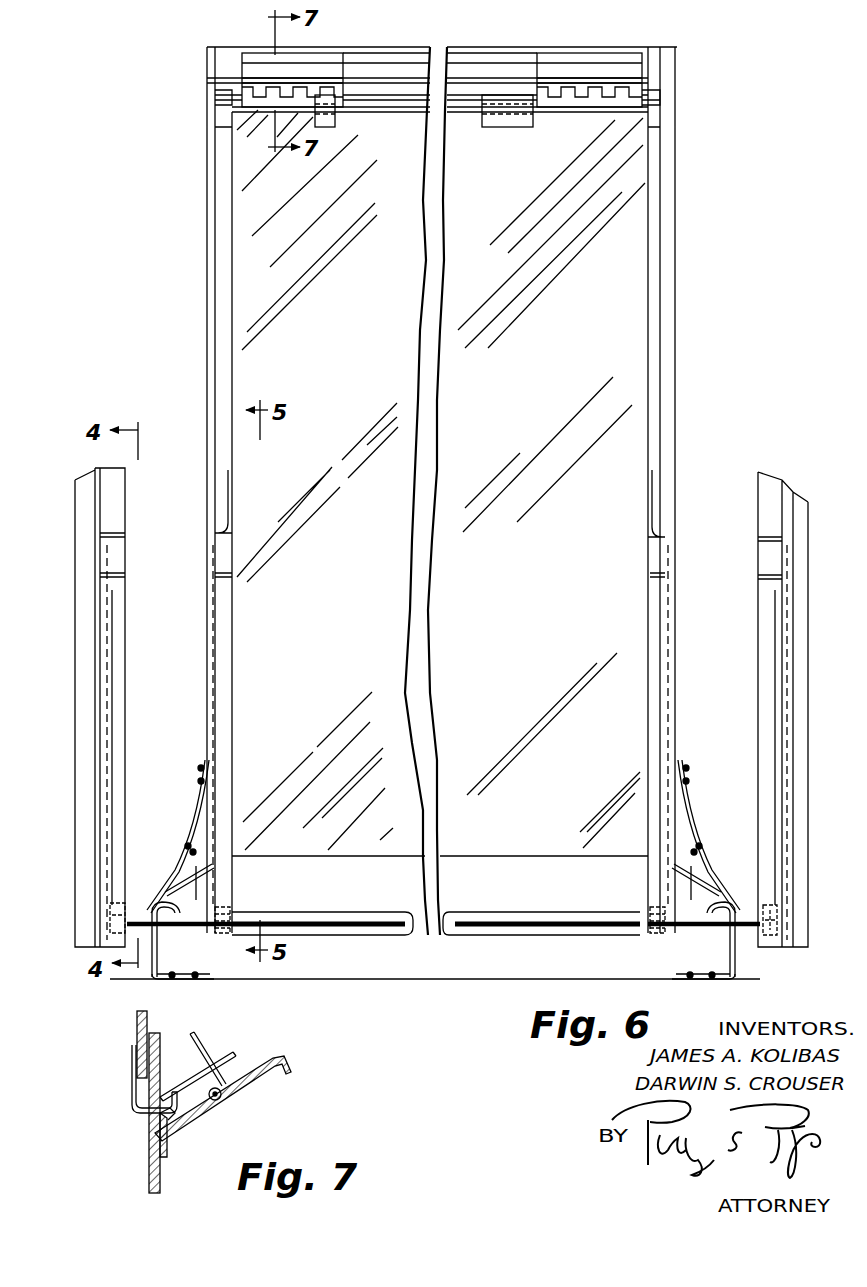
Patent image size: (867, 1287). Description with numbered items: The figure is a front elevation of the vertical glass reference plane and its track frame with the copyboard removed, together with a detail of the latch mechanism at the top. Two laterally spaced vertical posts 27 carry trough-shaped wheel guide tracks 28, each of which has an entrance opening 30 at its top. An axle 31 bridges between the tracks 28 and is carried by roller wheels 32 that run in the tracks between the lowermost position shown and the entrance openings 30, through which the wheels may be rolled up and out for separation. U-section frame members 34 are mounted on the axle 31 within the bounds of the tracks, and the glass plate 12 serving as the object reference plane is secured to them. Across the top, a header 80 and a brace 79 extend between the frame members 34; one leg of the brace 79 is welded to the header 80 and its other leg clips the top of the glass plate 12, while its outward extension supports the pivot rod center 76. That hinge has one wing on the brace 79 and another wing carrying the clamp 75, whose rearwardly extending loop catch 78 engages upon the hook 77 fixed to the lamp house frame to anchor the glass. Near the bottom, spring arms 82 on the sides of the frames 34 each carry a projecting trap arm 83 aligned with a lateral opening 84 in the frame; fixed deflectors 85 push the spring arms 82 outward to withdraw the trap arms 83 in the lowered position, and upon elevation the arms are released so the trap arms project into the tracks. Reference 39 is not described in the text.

In FIG. 6, the glass plate 12 is at (441, 480).
In FIG. 7, the glass plate 12 is at (162, 1178).
In FIG. 6, the vertical post 27 is at (82, 505).
In FIG. 6, the wheel guide track 28 is at (122, 596).
In FIG. 6, the entrance opening 30 is at (122, 528).
In FIG. 6, the axle 31 is at (503, 918).
In FIG. 6, the roller wheel 32 is at (122, 900).
In FIG. 6, the frame member 34 is at (236, 471).
In FIG. 6, the bracket flange 39 is at (215, 538).
In FIG. 7, the clamp 75 is at (202, 1048).
In FIG. 6, the pivot rod center 76 is at (550, 110).
In FIG. 7, the pivot rod center 76 is at (222, 1100).
In FIG. 7, the hook 77 is at (132, 1084).
In FIG. 7, the loop catch 78 is at (186, 1080).
In FIG. 7, the brace 79 is at (180, 1130).
In FIG. 6, the header 80 is at (606, 52).
In FIG. 7, the header 80 is at (152, 1146).
In FIG. 6, the spring arm 82 is at (206, 803).
In FIG. 6, the trap arm 83 is at (196, 880).
In FIG. 6, the lateral opening 84 is at (213, 867).
In FIG. 6, the deflector 85 is at (157, 938).